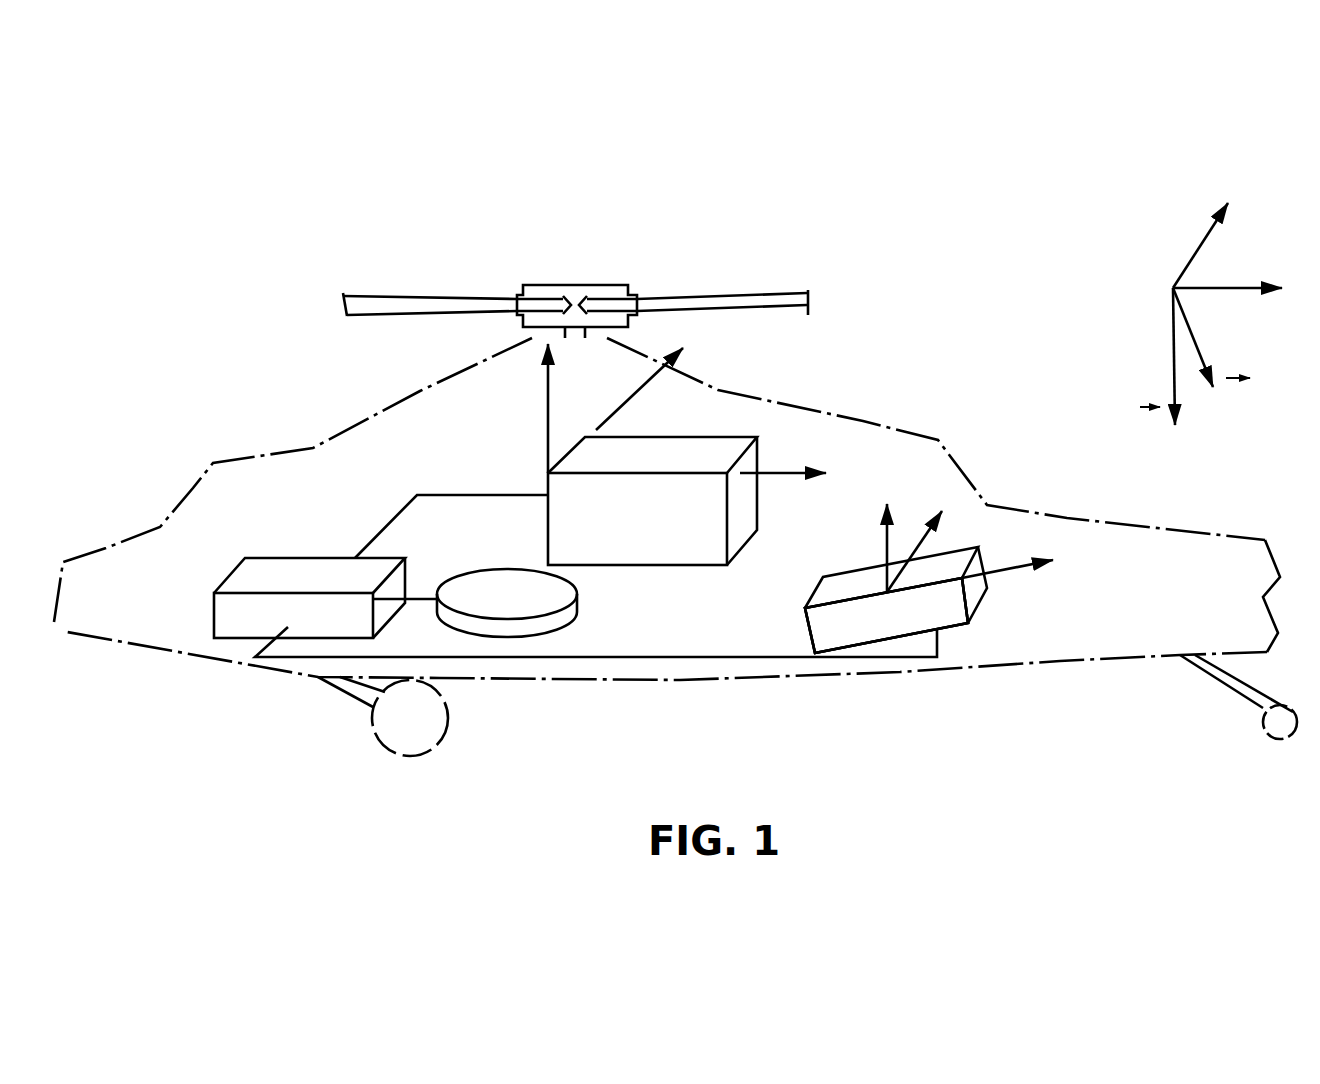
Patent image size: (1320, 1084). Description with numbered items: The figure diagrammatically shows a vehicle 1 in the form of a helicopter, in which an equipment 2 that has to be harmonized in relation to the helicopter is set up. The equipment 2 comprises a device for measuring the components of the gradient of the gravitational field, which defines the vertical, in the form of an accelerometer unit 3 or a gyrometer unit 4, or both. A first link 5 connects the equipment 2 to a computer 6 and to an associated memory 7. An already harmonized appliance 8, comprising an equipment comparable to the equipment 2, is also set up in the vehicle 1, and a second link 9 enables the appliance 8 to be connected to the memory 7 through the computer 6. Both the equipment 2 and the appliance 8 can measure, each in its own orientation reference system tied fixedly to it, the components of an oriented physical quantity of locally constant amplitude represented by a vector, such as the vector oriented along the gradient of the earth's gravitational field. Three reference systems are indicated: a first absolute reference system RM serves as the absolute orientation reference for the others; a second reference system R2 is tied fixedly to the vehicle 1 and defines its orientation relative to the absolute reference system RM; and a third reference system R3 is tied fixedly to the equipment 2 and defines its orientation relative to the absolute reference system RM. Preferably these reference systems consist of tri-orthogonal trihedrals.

The vehicle 1 is at (853, 418).
The equipment 2 is at (807, 625).
The accelerometer unit 3 is at (859, 614).
The gyrometer unit 4 is at (859, 614).
The first link 5 is at (727, 657).
The computer 6 is at (312, 576).
The memory 7 is at (512, 567).
The already harmonized appliance 8 is at (637, 566).
The second link 9 is at (393, 516).
The second reference system R2 is at (693, 406).
The third reference system R3 is at (970, 547).
The first absolute reference system RM is at (1183, 270).